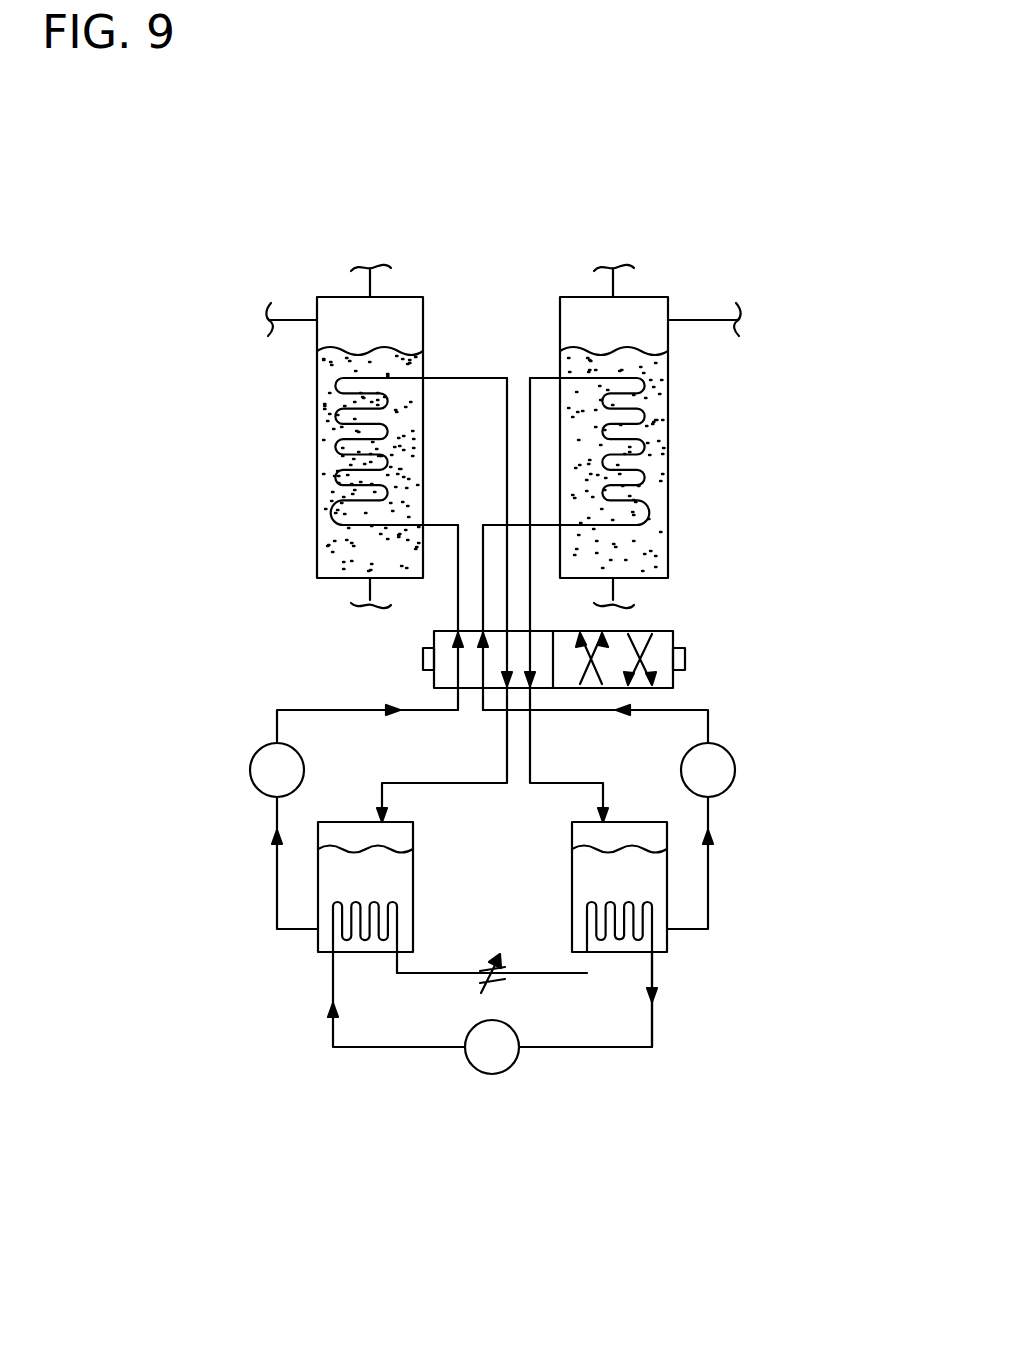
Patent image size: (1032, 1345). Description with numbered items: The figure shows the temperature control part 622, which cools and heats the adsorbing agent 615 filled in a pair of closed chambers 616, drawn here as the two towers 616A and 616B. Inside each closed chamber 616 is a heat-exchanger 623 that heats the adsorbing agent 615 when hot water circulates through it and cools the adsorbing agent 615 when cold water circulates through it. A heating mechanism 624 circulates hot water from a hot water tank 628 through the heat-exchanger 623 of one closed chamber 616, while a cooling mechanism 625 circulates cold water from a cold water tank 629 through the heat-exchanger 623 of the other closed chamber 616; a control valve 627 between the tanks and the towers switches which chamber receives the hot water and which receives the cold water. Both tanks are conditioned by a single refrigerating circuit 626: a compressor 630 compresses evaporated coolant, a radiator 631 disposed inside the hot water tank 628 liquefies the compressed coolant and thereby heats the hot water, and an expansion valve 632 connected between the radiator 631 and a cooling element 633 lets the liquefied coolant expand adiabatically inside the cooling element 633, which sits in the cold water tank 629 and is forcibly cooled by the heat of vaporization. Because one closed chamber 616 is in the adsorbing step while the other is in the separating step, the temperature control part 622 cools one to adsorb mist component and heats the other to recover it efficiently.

The closed chamber 616 is at (614, 184).
The first adsorption tower 616A is at (566, 297).
The second adsorption tower 616B is at (411, 297).
The adsorbing agent 615 is at (325, 393).
The heat-exchanger 623 is at (330, 484).
The control valve 627 is at (658, 632).
The temperature control part 622 is at (777, 683).
The hot water tank 628 is at (352, 822).
The cold water tank 629 is at (632, 822).
The heating mechanism 624 is at (239, 912).
The cooling mechanism 625 is at (752, 882).
The refrigerating circuit 626 is at (638, 1068).
The compressor 630 is at (480, 1073).
The radiator 631 is at (333, 935).
The expansion valve 632 is at (485, 965).
The cooling element 633 is at (652, 930).